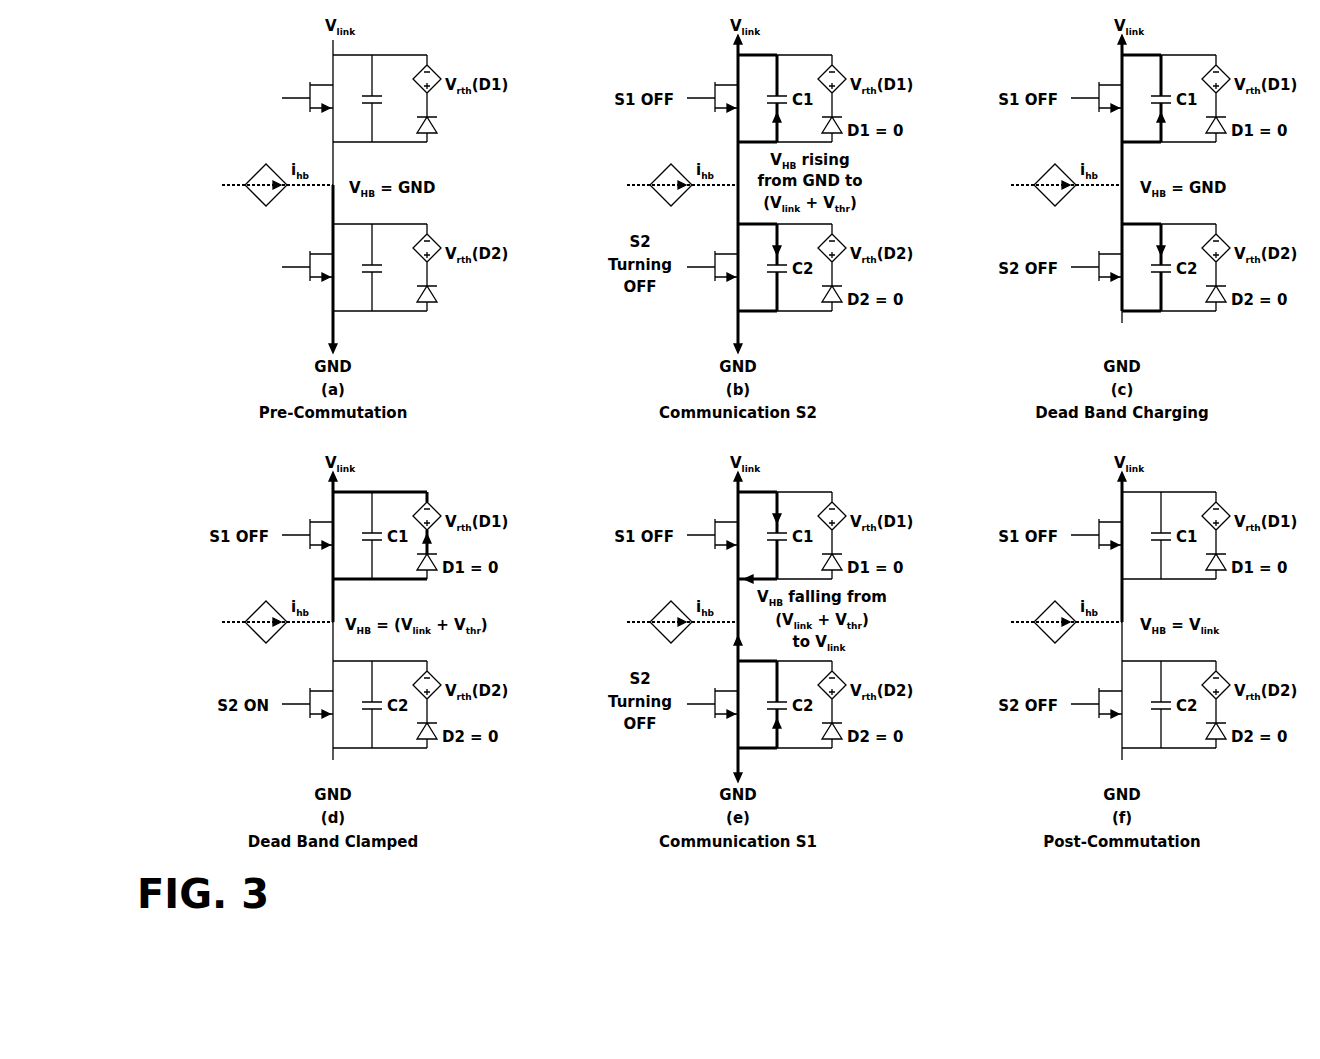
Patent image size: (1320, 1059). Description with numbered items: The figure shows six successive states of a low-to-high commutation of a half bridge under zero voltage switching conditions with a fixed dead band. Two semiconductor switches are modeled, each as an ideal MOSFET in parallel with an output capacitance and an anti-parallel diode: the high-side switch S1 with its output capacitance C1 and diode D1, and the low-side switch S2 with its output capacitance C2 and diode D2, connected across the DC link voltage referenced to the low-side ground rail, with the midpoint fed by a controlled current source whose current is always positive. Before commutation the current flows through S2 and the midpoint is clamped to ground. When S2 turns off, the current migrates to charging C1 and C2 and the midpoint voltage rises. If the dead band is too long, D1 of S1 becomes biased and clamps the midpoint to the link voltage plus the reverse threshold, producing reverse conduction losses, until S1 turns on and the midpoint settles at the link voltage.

The high-side switch S1 is at (271, 97).
The low-side switch S2 is at (275, 266).
The output capacitance of the high-side switch C1 is at (385, 98).
The output capacitance of the low-side switch C2 is at (385, 267).
The anti-parallel diode of the high-side switch D1 is at (455, 98).
The anti-parallel diode of the low-side switch D2 is at (455, 267).